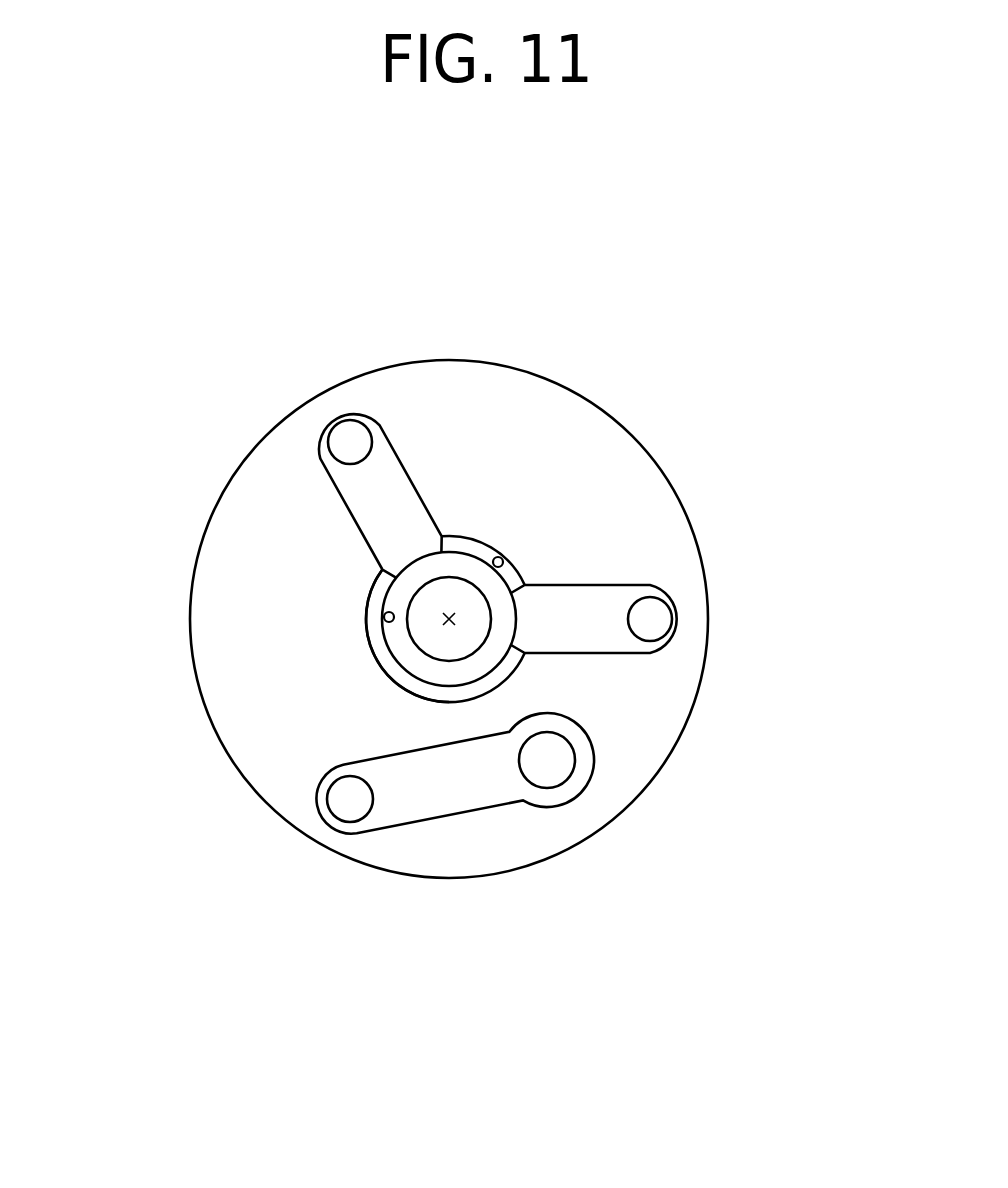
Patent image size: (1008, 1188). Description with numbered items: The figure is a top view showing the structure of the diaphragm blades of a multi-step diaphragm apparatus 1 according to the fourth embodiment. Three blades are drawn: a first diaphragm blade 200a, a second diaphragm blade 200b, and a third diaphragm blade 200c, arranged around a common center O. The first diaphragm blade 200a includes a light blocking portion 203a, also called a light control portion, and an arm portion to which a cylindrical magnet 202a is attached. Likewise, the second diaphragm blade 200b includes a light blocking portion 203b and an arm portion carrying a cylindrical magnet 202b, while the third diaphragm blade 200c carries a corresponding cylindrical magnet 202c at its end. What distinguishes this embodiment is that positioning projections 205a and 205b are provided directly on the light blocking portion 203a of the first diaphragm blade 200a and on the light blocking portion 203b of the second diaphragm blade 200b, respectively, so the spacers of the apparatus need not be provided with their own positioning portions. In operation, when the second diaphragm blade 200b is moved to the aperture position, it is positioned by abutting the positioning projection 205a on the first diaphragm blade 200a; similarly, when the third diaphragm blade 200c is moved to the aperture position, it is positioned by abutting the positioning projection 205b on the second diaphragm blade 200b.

The multi-step diaphragm apparatus 1 is at (632, 312).
The rotation center O is at (447, 628).
The first diaphragm blade 200a is at (611, 600).
The second diaphragm blade 200b is at (382, 512).
The third diaphragm blade 200c is at (457, 780).
The cylindrical magnet 202a is at (652, 621).
The cylindrical magnet 202b is at (348, 440).
The third hole 202c is at (345, 803).
The light blocking portion 203a is at (500, 676).
The light blocking portion 203b is at (402, 653).
The positioning projection 205a is at (501, 559).
The positioning projection 205b is at (385, 618).